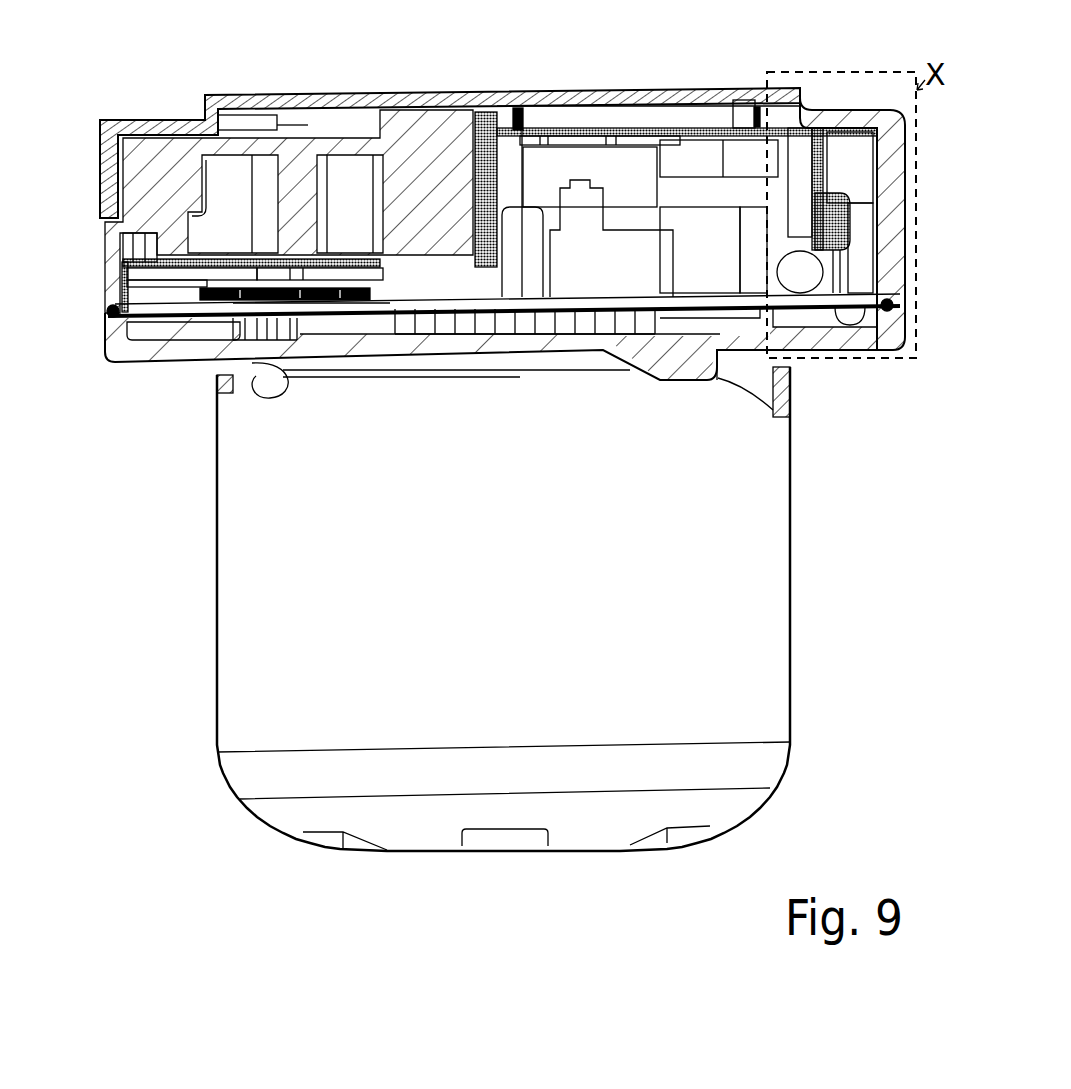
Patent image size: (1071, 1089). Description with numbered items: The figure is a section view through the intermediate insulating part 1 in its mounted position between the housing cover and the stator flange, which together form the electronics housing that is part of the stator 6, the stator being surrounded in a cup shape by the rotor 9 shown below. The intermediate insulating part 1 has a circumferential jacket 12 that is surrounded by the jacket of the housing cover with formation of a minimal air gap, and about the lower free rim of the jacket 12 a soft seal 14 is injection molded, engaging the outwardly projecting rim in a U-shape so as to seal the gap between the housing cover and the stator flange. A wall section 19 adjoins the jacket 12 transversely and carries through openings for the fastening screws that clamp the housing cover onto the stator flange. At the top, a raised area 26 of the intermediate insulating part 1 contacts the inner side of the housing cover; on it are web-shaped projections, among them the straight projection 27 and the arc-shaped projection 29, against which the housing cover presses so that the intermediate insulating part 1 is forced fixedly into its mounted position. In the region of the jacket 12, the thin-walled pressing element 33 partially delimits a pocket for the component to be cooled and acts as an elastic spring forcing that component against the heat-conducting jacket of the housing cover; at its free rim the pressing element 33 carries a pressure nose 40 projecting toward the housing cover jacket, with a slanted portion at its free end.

The intermediate insulating part 1 is at (270, 240).
The projection 29 is at (557, 100).
The raised area 26 is at (587, 127).
The projection 27 is at (767, 108).
The pressing element 33 is at (826, 166).
The pressure nose 40 is at (842, 230).
The jacket 12 is at (110, 296).
The soft seal 14 is at (106, 318).
The wall section 19 is at (232, 265).
The rotor 9 is at (240, 485).
The stator 6 is at (717, 372).